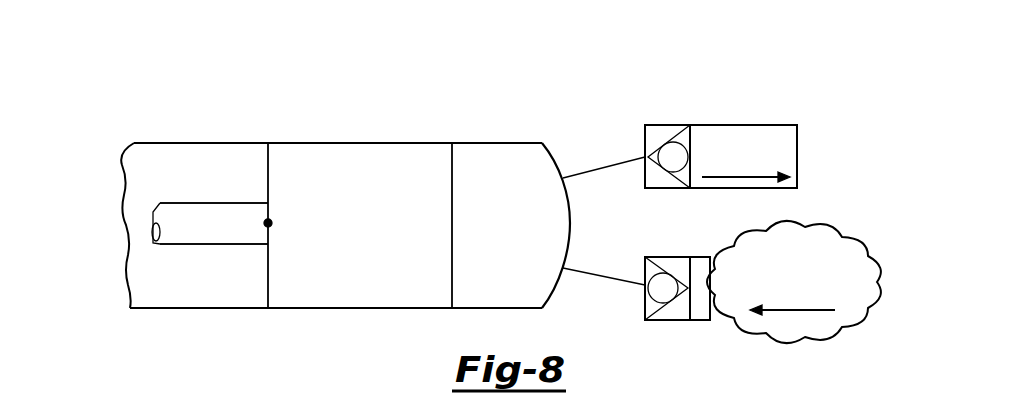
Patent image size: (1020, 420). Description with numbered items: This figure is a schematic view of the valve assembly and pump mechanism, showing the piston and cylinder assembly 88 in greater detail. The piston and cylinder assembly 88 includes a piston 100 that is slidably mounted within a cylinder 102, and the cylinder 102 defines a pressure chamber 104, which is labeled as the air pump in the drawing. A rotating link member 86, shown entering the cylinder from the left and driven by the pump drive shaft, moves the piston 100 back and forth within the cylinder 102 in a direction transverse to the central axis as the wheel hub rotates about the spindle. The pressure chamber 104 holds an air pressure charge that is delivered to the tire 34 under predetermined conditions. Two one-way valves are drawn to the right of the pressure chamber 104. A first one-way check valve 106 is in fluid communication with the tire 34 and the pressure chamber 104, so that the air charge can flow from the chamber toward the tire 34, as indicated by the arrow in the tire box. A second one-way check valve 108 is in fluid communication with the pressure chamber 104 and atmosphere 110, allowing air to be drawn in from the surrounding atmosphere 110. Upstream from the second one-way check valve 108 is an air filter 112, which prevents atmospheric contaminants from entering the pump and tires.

The tire 34 is at (783, 133).
The rotating link member 86 is at (230, 234).
The piston and cylinder assembly 88 is at (360, 322).
The piston 100 is at (345, 153).
The cylinder 102 is at (222, 143).
The pressure chamber 104 is at (481, 155).
The first one-way check valve 106 is at (655, 178).
The second one-way check valve 108 is at (645, 262).
The atmosphere 110 is at (840, 255).
The air filter 112 is at (700, 317).